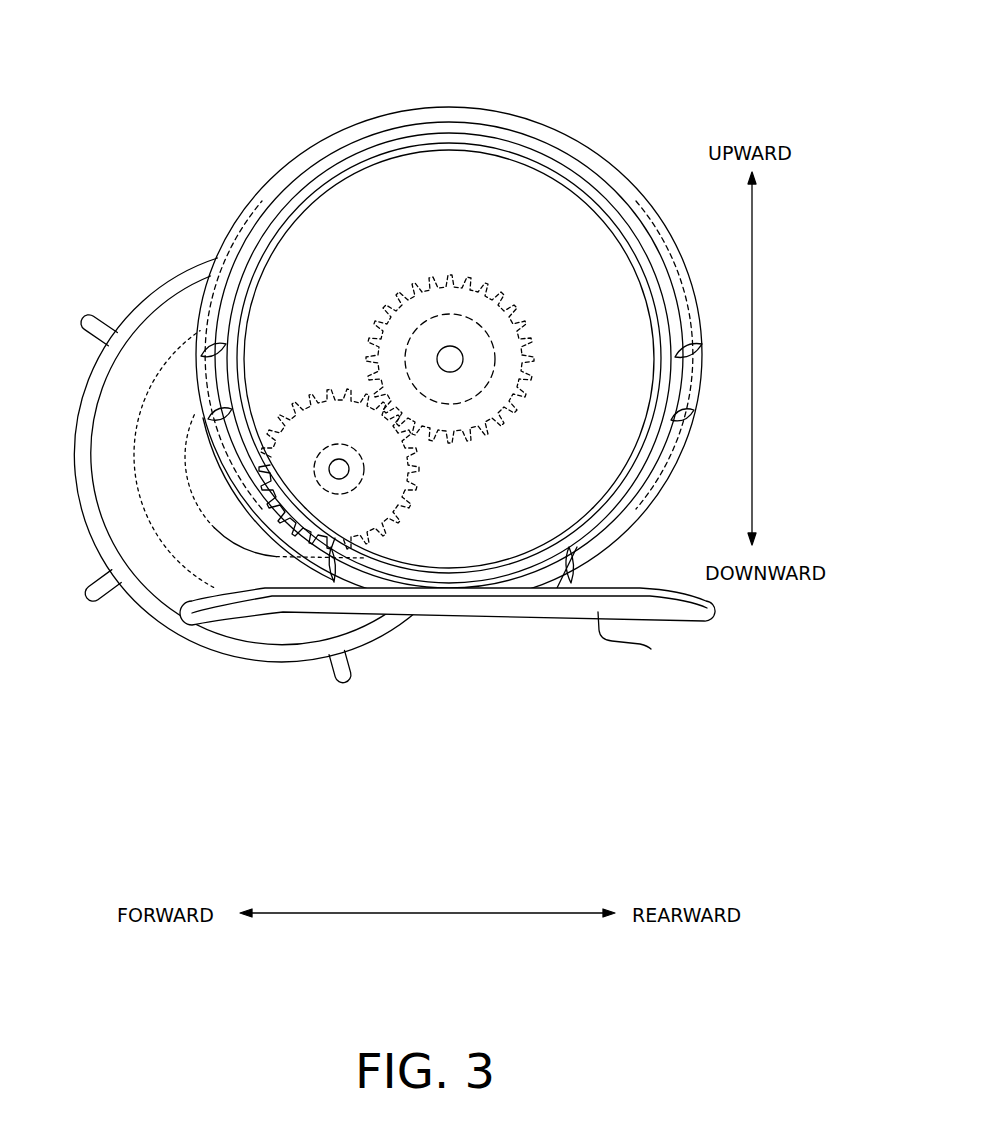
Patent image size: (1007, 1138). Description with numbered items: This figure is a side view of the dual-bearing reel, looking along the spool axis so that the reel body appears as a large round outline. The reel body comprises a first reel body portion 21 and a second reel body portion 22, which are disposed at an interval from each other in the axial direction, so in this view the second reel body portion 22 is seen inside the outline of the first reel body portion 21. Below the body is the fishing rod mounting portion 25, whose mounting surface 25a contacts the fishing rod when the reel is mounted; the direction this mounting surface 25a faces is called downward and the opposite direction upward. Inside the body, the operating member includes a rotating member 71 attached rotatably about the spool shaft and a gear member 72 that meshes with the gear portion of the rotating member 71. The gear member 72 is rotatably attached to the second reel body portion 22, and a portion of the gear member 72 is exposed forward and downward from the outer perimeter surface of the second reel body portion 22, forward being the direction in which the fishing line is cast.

The first reel body portion 21 is at (512, 111).
The second reel body portion 22 is at (566, 167).
The fishing rod mounting portion 25 is at (712, 610).
The mounting surface 25a is at (651, 649).
The rotating member 71 is at (468, 442).
The gear member 72 is at (292, 516).